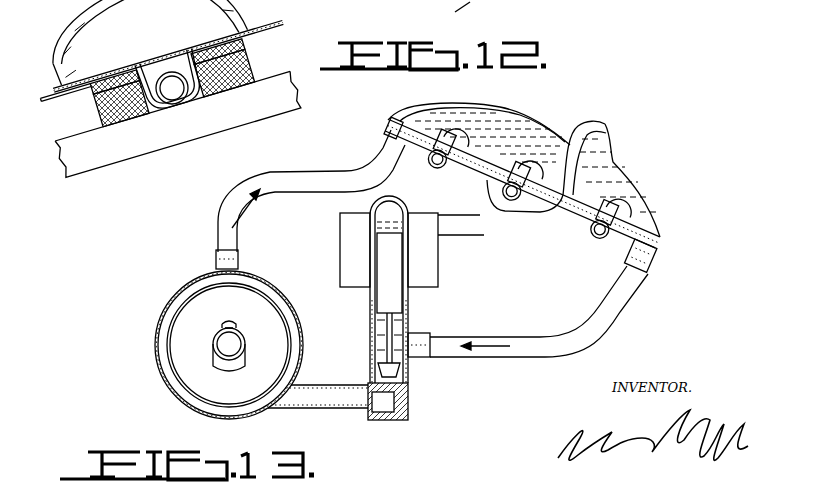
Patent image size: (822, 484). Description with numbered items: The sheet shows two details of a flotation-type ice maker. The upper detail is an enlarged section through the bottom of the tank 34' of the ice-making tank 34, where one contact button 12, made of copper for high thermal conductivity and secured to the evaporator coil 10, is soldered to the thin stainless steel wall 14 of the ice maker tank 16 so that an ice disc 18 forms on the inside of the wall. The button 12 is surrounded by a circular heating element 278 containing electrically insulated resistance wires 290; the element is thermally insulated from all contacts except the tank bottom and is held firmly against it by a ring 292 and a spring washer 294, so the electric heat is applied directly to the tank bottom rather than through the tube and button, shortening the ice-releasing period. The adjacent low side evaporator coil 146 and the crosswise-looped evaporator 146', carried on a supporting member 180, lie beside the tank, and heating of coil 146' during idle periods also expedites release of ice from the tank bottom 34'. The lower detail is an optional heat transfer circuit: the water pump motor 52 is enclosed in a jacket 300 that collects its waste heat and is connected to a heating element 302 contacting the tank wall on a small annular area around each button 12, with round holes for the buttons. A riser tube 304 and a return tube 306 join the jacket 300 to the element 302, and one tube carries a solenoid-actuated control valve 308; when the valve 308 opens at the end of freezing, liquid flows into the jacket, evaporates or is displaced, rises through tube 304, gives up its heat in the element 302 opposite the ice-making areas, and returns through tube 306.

In FIG. 13, the evaporator coil 10 is at (452, 153).
In FIG. 12, the contact button 12 is at (167, 79).
In FIG. 13, the contact button 12 is at (526, 177).
In FIG. 13, the vertical wall 14 is at (614, 152).
In FIG. 13, the ice maker tank 16 is at (598, 150).
In FIG. 12, the ice disc 18 is at (150, 42).
In FIG. 13, the ice disc 18 is at (537, 173).
In FIG. 12, the tank 34 is at (474, 6).
In FIG. 13, the tank 34 is at (614, 157).
In FIG. 12, the bottom of the tank 34' is at (55, 75).
In FIG. 13, the bottom of the tank 34' is at (619, 171).
In FIG. 13, the motor 52 is at (237, 324).
In FIG. 13, the evaporator coil 146 is at (518, 201).
In FIG. 12, the evaporator 146' is at (157, 105).
In FIG. 13, the evaporator 146' is at (518, 210).
In FIG. 12, the supporting member 180 is at (178, 124).
In FIG. 12, the heating element 278 is at (86, 96).
In FIG. 12, the resistance wires 290 is at (258, 36).
In FIG. 12, the ring 292 is at (254, 63).
In FIG. 12, the spring washer 294 is at (250, 50).
In FIG. 13, the jacket 300 is at (163, 320).
In FIG. 13, the heating element 302 is at (567, 207).
In FIG. 13, the riser tube 304 is at (218, 224).
In FIG. 13, the return tube 306 is at (540, 322).
In FIG. 13, the solenoid-actuated control valve 308 is at (370, 320).